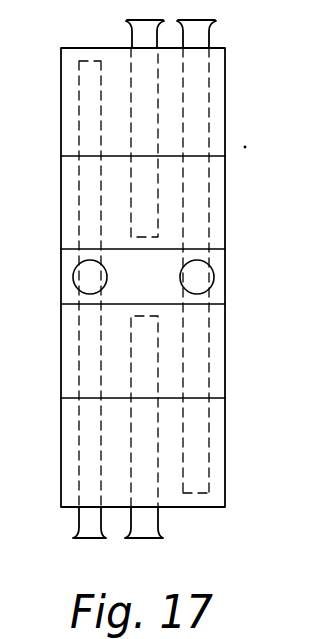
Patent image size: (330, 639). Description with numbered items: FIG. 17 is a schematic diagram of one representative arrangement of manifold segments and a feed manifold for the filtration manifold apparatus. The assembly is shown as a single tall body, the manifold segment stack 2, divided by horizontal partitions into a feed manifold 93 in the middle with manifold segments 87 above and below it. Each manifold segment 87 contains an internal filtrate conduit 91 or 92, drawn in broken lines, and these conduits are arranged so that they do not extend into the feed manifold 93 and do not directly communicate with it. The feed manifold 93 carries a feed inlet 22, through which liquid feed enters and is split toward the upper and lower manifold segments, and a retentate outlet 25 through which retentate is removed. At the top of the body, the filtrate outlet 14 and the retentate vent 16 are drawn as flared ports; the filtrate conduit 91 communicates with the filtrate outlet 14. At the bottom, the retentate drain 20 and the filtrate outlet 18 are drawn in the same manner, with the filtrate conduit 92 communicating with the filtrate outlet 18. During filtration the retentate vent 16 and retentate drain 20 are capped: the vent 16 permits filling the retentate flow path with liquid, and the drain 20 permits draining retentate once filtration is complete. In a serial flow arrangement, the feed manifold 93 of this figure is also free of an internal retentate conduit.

The manifold segment 2 is at (225, 80).
The filtrate outlet 14 is at (132, 37).
The retentate vent 16 is at (209, 37).
The filtrate outlet 18 is at (159, 520).
The retentate drain 20 is at (77, 520).
The feed inlet 22 is at (75, 285).
The retentate outlet 25 is at (212, 272).
The manifold segment 87 is at (218, 192).
The internal filtrate conduit 91 is at (131, 80).
The internal filtrate conduit 92 is at (210, 423).
The feed manifold 93 is at (208, 312).